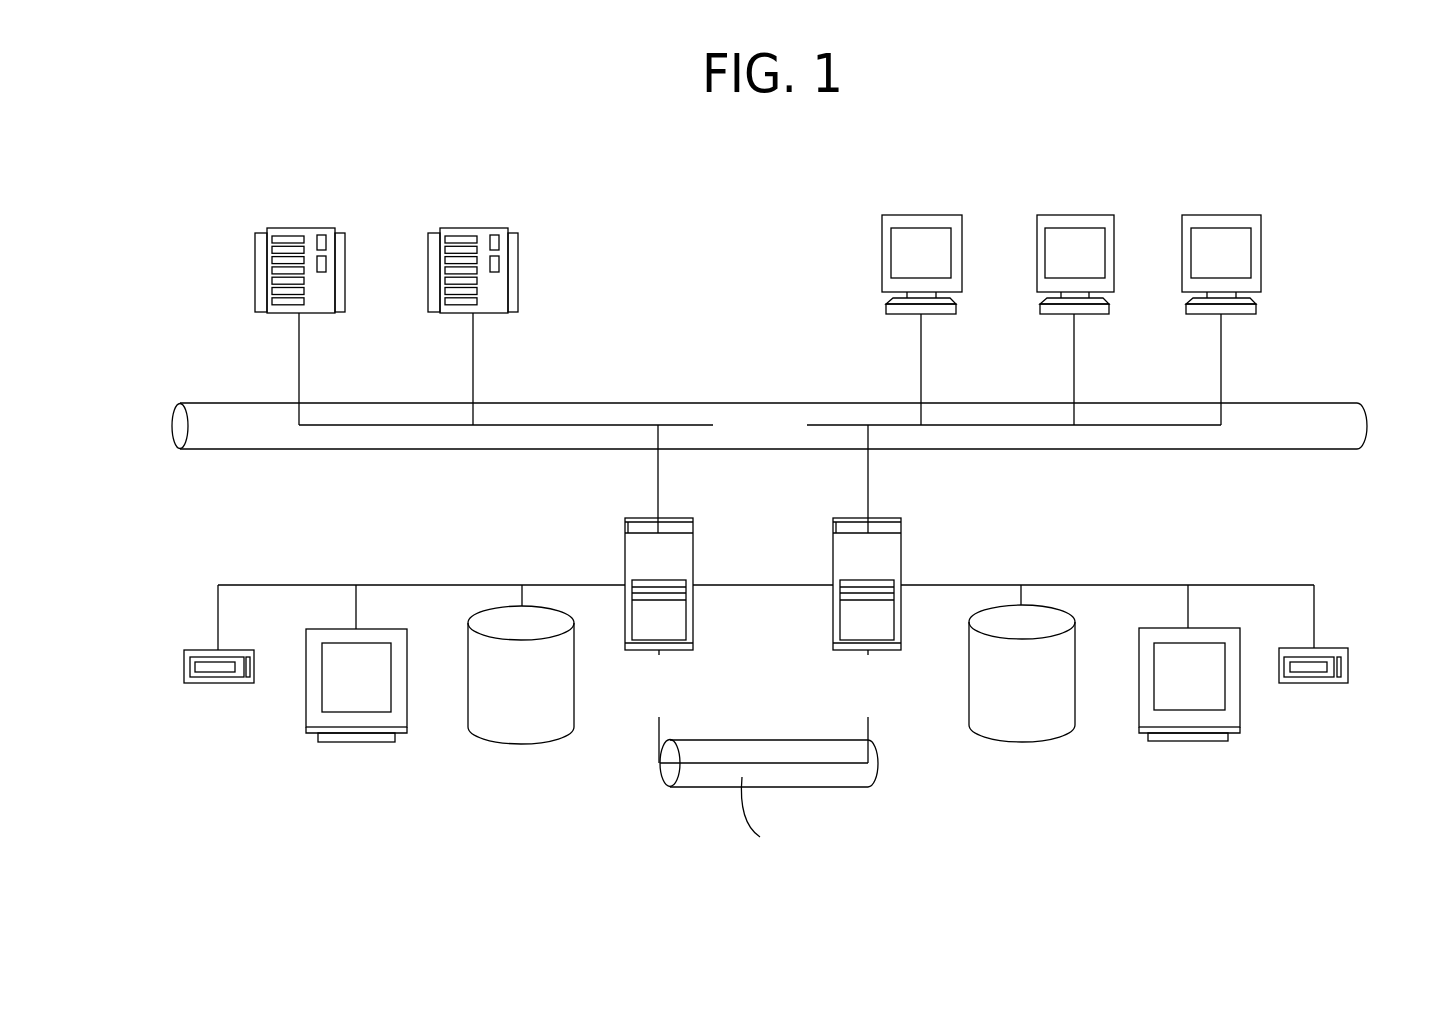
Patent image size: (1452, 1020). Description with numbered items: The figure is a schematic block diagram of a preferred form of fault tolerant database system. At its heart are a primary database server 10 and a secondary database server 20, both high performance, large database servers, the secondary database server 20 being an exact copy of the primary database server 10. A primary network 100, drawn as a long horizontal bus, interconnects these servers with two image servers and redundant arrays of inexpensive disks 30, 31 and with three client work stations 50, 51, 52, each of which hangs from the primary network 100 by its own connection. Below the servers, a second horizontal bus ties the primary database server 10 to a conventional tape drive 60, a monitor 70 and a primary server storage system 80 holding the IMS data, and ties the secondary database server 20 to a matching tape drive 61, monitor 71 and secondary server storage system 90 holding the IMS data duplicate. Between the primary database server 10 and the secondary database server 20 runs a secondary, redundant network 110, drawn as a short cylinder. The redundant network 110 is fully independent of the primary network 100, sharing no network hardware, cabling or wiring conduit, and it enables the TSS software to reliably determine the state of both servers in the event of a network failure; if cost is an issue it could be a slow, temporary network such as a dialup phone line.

The primary database server 10 is at (693, 518).
The secondary database server 20 is at (901, 518).
The image server and RAID 30 is at (255, 266).
The image server and RAID 31 is at (508, 260).
The client work station 50 is at (882, 265).
The client work station 51 is at (1037, 258).
The client work station 52 is at (1261, 271).
The tape drive 60 is at (184, 667).
The tape drive 61 is at (1348, 666).
The monitor 70 is at (306, 733).
The monitor 71 is at (1139, 733).
The primary server storage system 80 is at (508, 741).
The secondary server storage system 90 is at (1036, 730).
The primary network 100 is at (547, 424).
The redundant network 110 is at (878, 760).